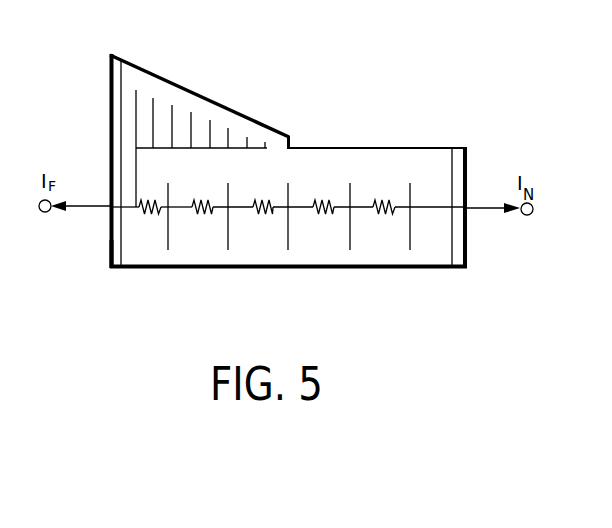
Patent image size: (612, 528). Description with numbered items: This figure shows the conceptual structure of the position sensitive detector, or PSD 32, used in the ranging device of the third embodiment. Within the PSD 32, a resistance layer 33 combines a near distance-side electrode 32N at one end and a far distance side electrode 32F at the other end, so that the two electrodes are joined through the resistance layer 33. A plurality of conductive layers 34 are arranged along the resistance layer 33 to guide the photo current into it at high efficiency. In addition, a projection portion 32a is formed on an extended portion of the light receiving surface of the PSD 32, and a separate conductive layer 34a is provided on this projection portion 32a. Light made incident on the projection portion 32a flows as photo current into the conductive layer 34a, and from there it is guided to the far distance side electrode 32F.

The PSD 32 is at (432, 148).
The projection portion 32a is at (288, 127).
The conductive layer 34a is at (137, 90).
The far distance side electrode 32F is at (116, 270).
The near distance side electrode 32N is at (460, 268).
The resistance layer 33 is at (322, 218).
The conductive layer 34 is at (350, 238).